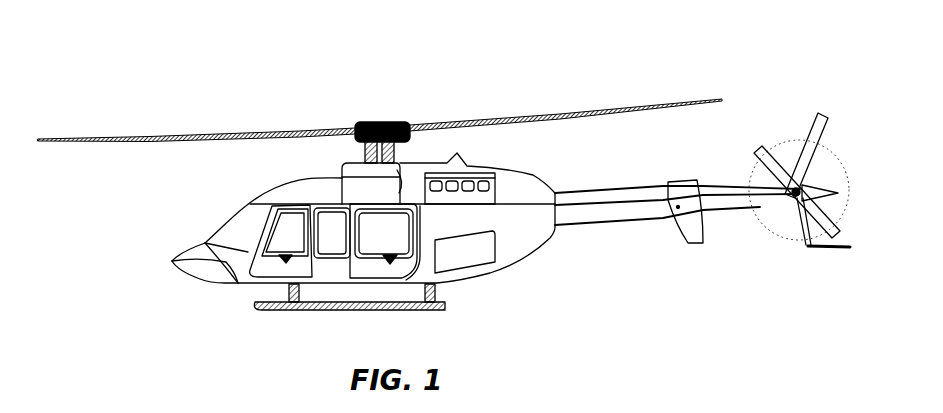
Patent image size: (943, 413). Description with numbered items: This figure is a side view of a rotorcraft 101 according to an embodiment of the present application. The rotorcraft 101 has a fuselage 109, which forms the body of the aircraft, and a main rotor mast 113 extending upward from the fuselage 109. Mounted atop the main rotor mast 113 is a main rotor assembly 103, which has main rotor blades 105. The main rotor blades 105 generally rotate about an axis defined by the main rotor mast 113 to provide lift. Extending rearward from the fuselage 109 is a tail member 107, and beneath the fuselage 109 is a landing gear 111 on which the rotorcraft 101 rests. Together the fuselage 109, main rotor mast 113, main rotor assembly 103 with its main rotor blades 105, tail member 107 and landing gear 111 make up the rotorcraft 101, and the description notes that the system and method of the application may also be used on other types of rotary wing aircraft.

The rotorcraft 101 is at (188, 79).
The main rotor assembly 103 is at (414, 103).
The main rotor blades 105 is at (615, 110).
The tail member 107 is at (627, 220).
The fuselage 109 is at (226, 282).
The landing gear 111 is at (321, 313).
The main rotor mast 113 is at (387, 156).